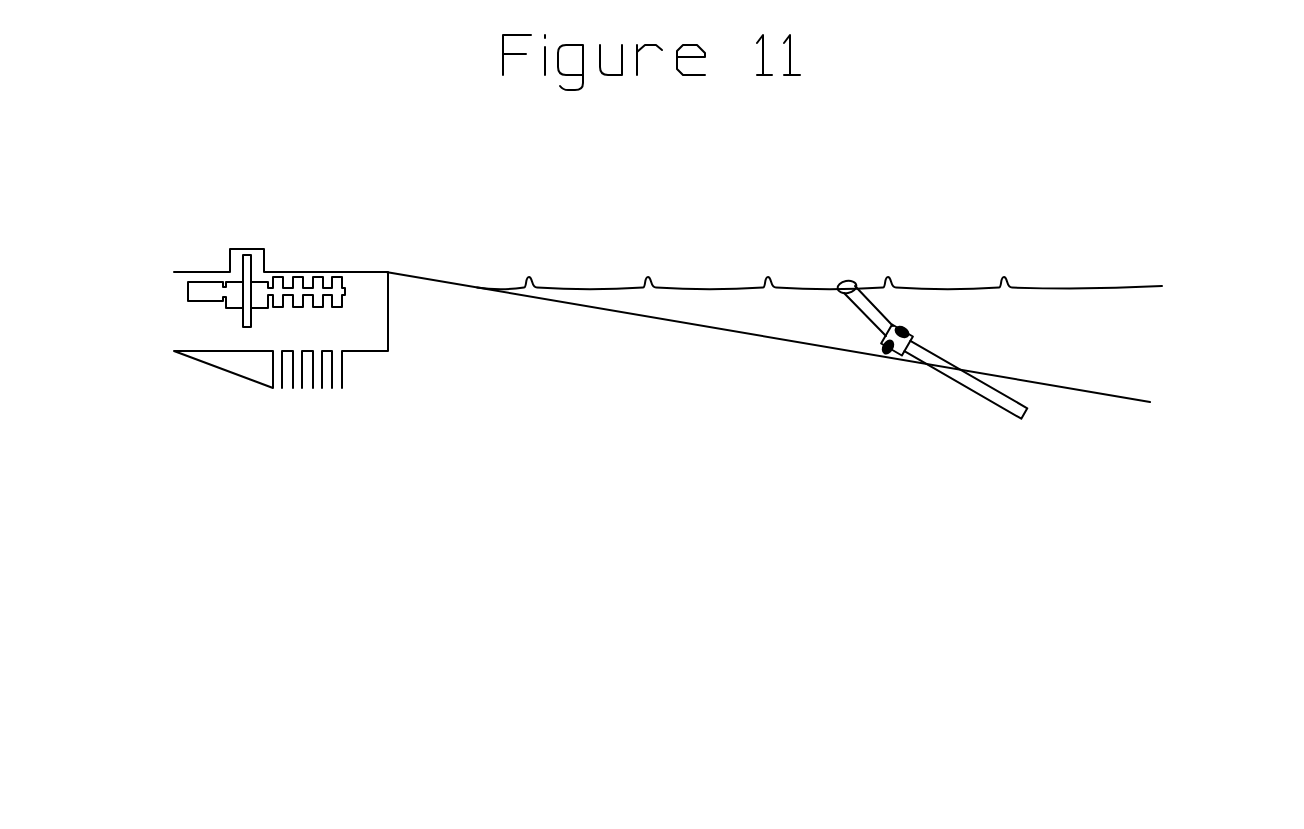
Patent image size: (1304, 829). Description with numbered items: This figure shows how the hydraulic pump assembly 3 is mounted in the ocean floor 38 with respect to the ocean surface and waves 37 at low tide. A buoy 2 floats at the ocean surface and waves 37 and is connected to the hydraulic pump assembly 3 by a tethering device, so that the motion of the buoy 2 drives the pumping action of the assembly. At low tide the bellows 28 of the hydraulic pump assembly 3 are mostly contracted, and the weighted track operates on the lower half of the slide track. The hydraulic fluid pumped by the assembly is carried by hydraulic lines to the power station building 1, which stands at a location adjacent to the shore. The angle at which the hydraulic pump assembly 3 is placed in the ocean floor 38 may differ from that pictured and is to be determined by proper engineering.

The power station building 1 is at (162, 316).
The buoy 2 is at (838, 270).
The hydraulic pump assembly 3 is at (958, 407).
The bellows 28 is at (870, 343).
The ocean surface and waves 37 is at (1085, 183).
The ocean floor 38 is at (1235, 357).